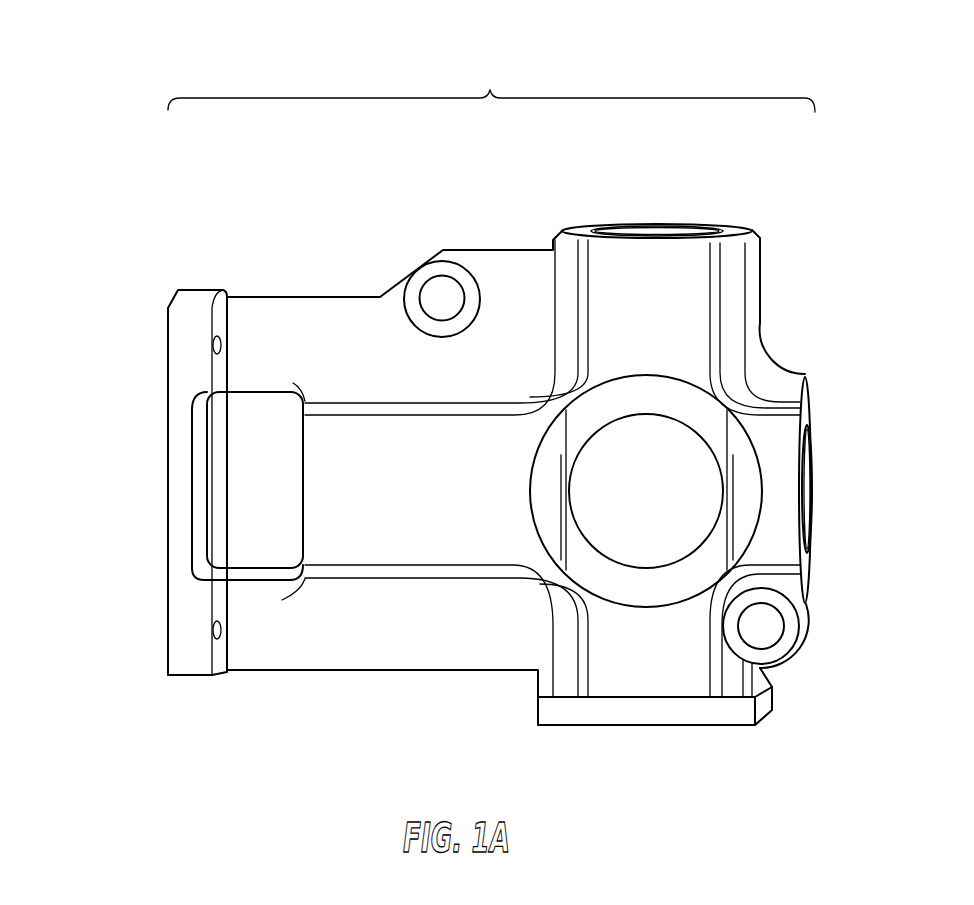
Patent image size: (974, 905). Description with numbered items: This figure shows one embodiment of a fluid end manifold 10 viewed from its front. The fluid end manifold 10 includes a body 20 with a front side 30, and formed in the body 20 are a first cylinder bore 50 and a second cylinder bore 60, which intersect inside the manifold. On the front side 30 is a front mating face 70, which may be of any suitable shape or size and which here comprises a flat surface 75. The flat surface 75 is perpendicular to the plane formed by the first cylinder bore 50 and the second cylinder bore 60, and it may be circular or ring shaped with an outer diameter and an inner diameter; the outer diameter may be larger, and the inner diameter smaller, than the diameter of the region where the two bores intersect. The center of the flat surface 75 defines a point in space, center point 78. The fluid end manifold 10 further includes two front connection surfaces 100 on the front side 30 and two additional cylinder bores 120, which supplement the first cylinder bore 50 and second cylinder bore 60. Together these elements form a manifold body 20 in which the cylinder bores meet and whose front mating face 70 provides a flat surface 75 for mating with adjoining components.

The fluid end manifold 10 is at (490, 92).
The body 20 is at (260, 295).
The front side 30 is at (398, 565).
The first cylinder bore 50 is at (703, 225).
The second cylinder bore 60 is at (812, 472).
The front mating face 70 is at (760, 522).
The flat surface 75 is at (743, 498).
The center point 78 is at (682, 462).
The front connection surface 100 is at (457, 270).
The additional cylinder bore 120 is at (443, 293).